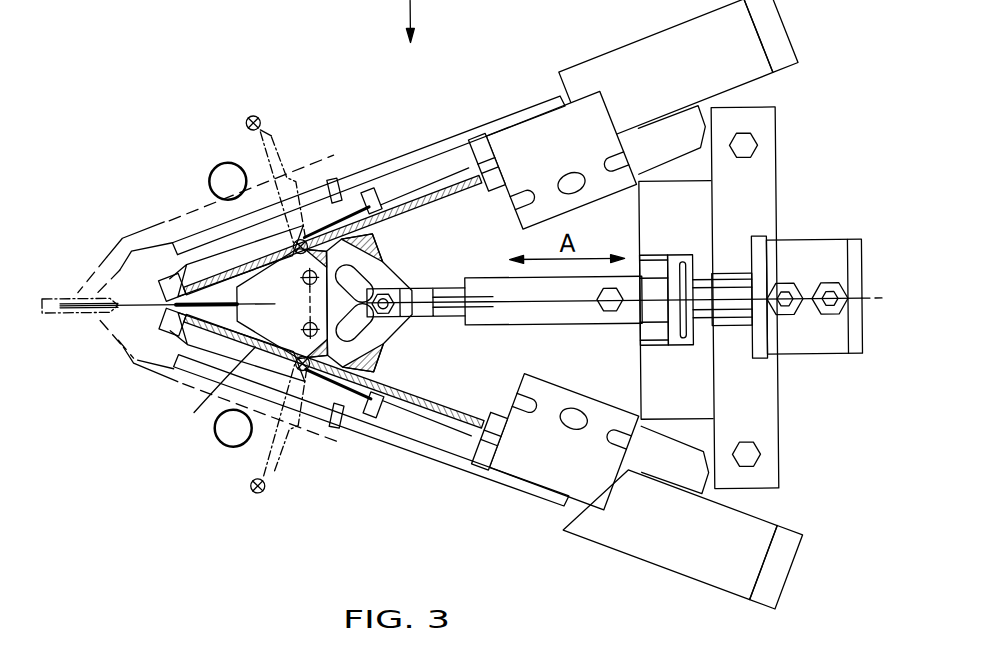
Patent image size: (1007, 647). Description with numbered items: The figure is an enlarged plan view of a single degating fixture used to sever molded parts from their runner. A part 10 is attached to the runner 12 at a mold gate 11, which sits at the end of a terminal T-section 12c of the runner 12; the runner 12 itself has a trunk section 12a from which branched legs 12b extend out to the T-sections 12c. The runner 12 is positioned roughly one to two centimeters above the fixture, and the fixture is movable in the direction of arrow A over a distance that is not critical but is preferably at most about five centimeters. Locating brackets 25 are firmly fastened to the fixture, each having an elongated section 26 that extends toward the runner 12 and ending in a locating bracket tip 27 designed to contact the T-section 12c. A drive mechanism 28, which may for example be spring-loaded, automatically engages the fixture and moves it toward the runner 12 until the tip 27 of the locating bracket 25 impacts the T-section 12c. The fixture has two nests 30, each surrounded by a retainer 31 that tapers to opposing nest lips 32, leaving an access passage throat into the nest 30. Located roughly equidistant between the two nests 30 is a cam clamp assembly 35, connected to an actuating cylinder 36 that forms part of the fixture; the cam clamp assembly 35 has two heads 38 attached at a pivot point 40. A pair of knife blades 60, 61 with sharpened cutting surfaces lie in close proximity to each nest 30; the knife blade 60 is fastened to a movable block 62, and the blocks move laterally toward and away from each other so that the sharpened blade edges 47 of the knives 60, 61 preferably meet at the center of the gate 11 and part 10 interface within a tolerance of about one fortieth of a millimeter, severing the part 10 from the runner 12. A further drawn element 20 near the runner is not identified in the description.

The part 10 is at (252, 114).
The mold gate 11 is at (267, 124).
The runner 12 is at (153, 212).
The trunk section 12a is at (66, 310).
The branched legs 12b is at (160, 382).
The T-section 12c is at (276, 150).
The ring 20 is at (217, 160).
The locating bracket 25 is at (563, 462).
The elongated section 26 is at (448, 448).
The locating bracket tip 27 is at (346, 415).
The drive mechanism 28 is at (833, 361).
The nest 30 is at (338, 245).
The retainer 31 is at (385, 218).
The nest lip 32 is at (350, 218).
The cam clamp assembly 35 is at (403, 340).
The actuating cylinder 36 is at (500, 328).
The head 38 is at (362, 279).
The pivot point 40 is at (397, 321).
The sharpened blade edge 47 is at (376, 412).
The knife blade 60 is at (208, 391).
The knife blade 61 is at (418, 433).
The movable block 62 is at (428, 196).